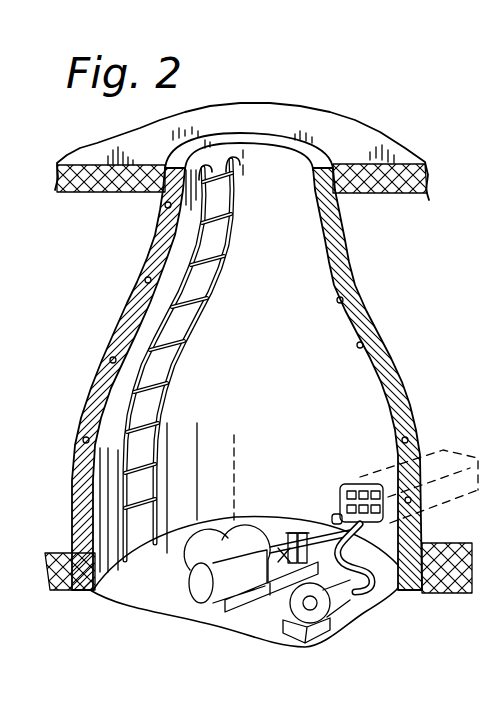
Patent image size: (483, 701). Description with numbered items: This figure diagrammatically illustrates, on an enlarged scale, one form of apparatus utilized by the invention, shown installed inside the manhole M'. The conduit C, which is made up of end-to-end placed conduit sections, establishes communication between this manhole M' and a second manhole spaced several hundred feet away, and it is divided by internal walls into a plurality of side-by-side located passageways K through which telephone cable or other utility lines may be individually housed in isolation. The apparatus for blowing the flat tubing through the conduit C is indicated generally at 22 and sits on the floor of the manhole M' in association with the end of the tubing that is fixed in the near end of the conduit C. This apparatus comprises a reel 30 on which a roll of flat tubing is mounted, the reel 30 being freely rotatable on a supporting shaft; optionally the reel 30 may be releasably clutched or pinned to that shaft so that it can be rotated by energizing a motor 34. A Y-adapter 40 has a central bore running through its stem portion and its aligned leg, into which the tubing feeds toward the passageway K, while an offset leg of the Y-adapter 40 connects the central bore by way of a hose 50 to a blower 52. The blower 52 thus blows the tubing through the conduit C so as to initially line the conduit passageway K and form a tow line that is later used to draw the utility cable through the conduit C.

The apparatus for blowing tubing 22 is at (183, 607).
The reel 30 is at (188, 552).
The motor 34 is at (217, 593).
The Y-adapter 40 is at (340, 520).
The hose 50 is at (388, 547).
The blower 52 is at (322, 613).
The manhole M' is at (252, 379).
The passageway K is at (341, 494).
The conduit C is at (445, 445).